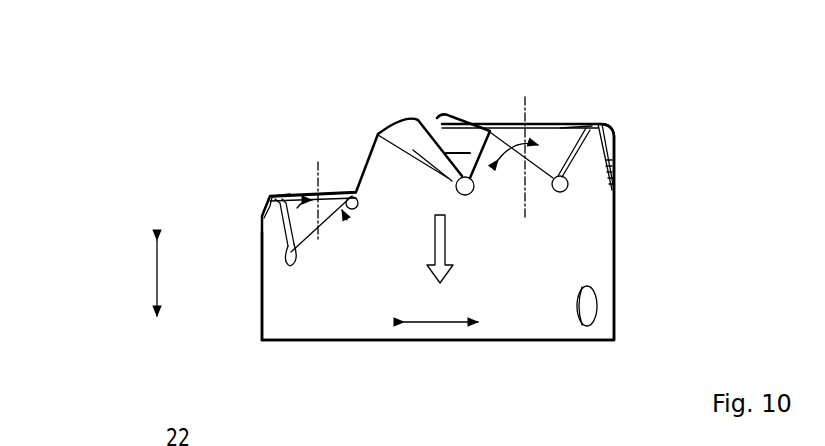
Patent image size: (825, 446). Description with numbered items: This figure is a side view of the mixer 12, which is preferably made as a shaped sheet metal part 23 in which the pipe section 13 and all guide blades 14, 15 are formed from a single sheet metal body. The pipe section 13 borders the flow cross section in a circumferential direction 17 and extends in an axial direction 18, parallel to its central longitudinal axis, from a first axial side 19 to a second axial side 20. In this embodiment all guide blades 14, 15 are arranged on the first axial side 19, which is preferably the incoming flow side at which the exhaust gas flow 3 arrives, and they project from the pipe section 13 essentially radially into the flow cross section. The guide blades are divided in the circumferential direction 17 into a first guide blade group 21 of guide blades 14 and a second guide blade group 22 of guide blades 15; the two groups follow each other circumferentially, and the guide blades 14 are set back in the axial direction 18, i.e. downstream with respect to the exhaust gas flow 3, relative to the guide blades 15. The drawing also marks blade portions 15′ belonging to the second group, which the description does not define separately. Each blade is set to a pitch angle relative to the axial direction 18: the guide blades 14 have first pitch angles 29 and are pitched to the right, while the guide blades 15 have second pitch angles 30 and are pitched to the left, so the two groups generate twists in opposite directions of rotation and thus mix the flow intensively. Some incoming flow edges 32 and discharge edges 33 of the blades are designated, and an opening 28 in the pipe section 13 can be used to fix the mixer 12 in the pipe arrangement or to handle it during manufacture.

The mixer 12 is at (238, 118).
The pipe section 13 is at (275, 298).
The guide blade 14 is at (300, 236).
The guide blade 15 is at (604, 130).
The folded flap 15′ is at (402, 121).
The circumferential direction 17 is at (442, 324).
The axial direction 18 is at (156, 277).
The first axial side 19 is at (528, 124).
The second axial side 20 is at (520, 342).
The first guide blade group 21 is at (242, 204).
The second guide blade group 22 is at (644, 158).
The shaped sheet metal part 23 is at (618, 270).
The opening 28 is at (590, 306).
The first pitch angle 29 is at (335, 192).
The second pitch angle 30 is at (515, 125).
The incoming flow edge 32 is at (296, 194).
The discharge edge 33 is at (282, 256).
The exhaust gas flow 3 is at (446, 240).